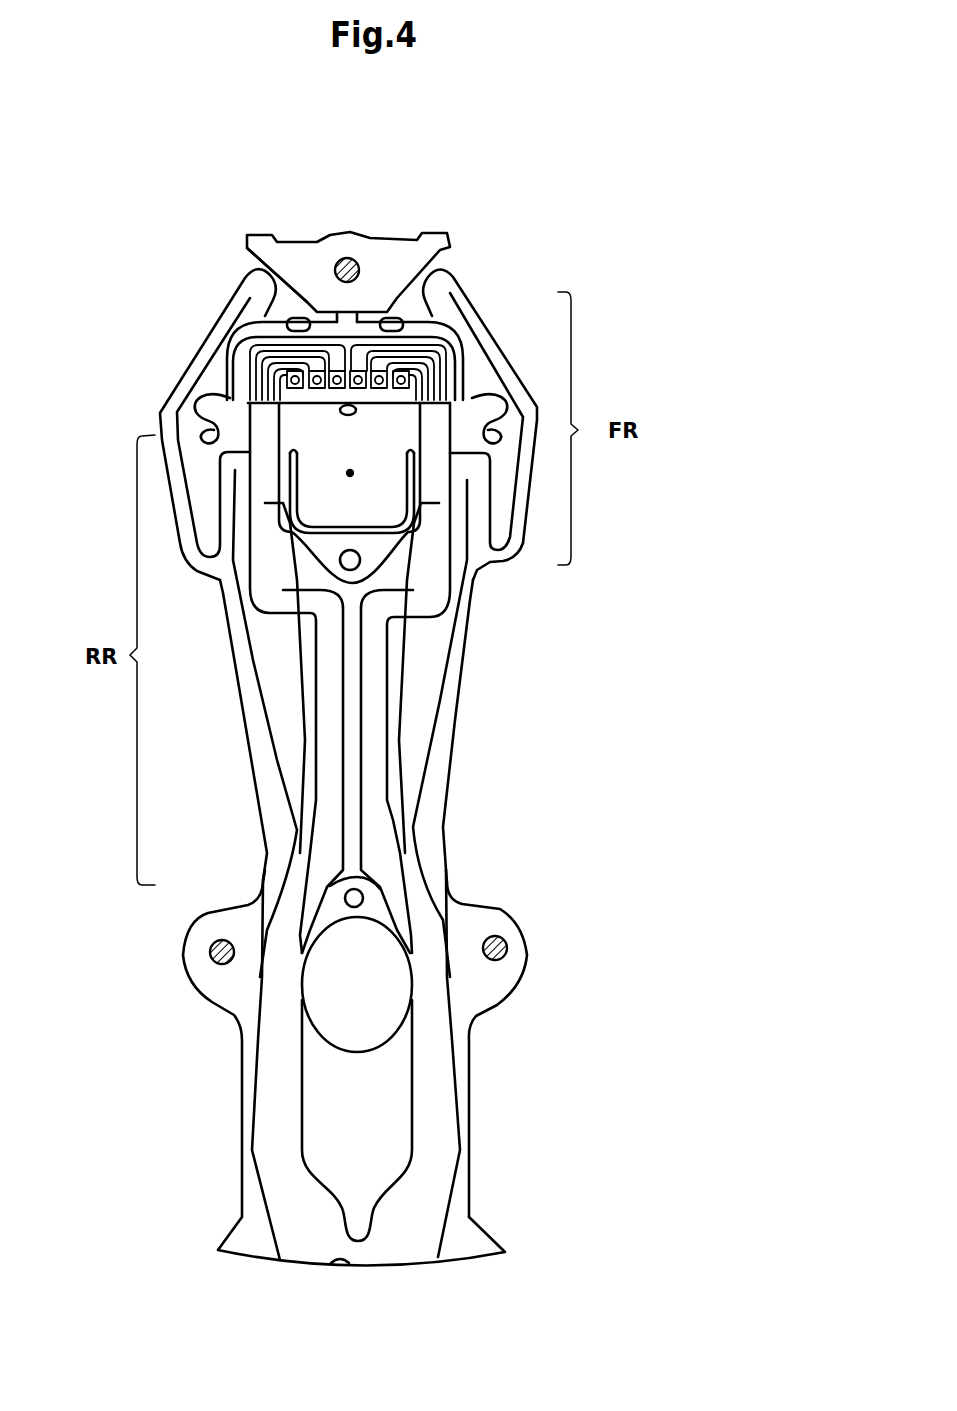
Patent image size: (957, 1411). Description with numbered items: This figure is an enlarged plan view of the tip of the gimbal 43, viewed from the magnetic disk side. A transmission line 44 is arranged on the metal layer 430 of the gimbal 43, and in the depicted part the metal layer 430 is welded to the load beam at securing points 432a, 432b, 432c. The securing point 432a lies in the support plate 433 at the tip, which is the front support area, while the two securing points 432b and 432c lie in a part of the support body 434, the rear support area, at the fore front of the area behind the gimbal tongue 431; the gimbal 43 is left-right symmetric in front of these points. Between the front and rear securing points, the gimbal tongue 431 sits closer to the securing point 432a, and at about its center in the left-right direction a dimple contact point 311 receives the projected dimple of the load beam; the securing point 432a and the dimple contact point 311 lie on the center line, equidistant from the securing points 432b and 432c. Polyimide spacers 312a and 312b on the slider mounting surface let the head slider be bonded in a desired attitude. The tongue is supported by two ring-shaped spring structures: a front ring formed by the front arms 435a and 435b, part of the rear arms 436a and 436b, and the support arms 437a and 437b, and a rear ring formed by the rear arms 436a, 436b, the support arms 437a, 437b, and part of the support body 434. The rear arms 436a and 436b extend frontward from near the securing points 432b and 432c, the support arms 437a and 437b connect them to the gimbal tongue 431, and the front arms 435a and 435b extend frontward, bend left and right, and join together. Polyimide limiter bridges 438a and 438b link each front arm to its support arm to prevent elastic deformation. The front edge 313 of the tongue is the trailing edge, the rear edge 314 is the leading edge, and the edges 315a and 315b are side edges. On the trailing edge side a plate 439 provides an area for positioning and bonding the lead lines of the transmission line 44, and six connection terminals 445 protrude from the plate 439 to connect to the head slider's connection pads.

The gimbal 43 is at (108, 149).
The connection terminals 445 is at (248, 236).
The securing point 432a is at (341, 258).
The support plate 433 is at (440, 235).
The limiter bridge 438a is at (453, 328).
The limiter bridge 438b is at (228, 378).
The front arm 435a is at (456, 333).
The front arm 435b is at (208, 330).
The plate 439 is at (468, 340).
The front edge (trailing edge) 313 is at (347, 372).
The dimple contact point 311 is at (350, 472).
The spacer 312a is at (352, 416).
The spacer 312b is at (325, 503).
The side edge 315a is at (418, 585).
The side edge 315b is at (290, 588).
The support arm 437a is at (462, 447).
The support arm 437b is at (240, 504).
The rear arm 436a is at (455, 762).
The rear arm 436b is at (236, 685).
The gimbal tongue 431 is at (401, 548).
The rear edge (leading edge) 314 is at (303, 697).
The support body 434 is at (463, 887).
The securing point 432b is at (507, 948).
The securing point 432c is at (210, 952).
The transmission line 44 is at (252, 1093).
The metal layer 430 is at (470, 1240).